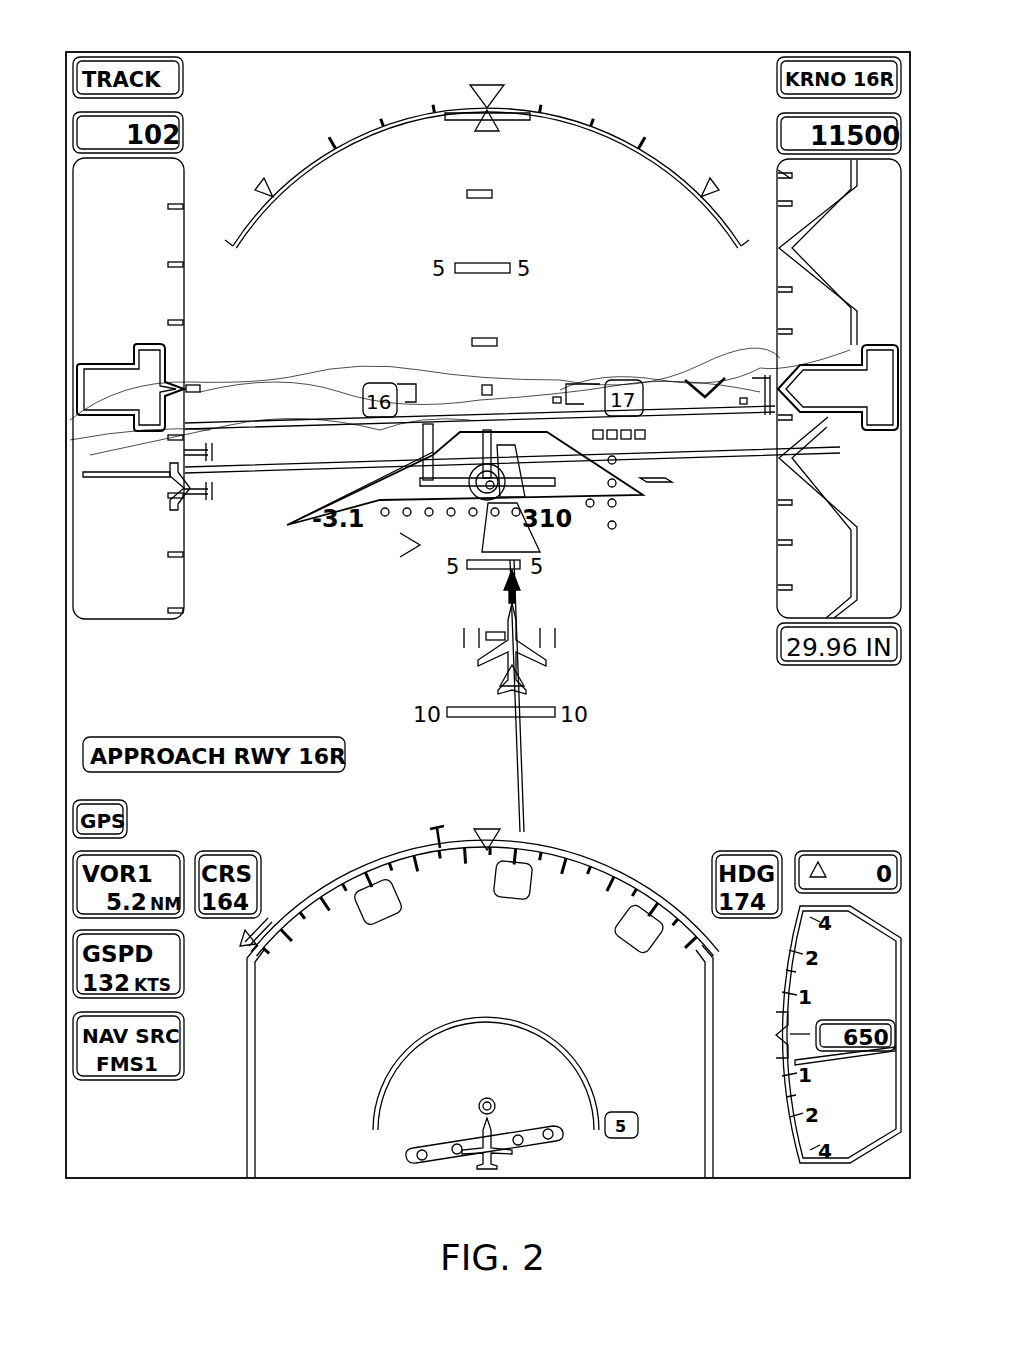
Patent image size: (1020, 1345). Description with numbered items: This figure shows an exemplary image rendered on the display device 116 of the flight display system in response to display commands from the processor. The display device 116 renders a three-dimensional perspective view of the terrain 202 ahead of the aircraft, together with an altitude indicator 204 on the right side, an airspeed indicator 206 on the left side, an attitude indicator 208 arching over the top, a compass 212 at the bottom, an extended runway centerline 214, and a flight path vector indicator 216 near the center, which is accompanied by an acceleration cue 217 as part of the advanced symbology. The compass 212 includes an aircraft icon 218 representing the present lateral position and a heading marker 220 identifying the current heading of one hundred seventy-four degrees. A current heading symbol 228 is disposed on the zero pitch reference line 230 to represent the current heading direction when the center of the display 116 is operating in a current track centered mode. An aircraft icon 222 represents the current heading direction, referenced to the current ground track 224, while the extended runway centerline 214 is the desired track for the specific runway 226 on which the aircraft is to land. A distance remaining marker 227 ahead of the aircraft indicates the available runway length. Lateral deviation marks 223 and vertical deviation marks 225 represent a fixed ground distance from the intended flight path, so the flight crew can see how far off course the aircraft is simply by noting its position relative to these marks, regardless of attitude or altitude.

The display device 116 is at (707, 52).
The terrain 202 is at (310, 378).
The altitude indicator 204 is at (777, 267).
The airspeed indicator 206 is at (184, 291).
The attitude indicator 208 is at (640, 162).
The compass 212 is at (604, 858).
The extended runway centerline 214 is at (530, 760).
The flight path vector indicator 216 is at (455, 475).
The acceleration cue 217 is at (418, 438).
The aircraft icon 218 is at (500, 1152).
The heading marker 220 is at (480, 825).
The aircraft icon 222 is at (522, 668).
The lateral deviation marks 223 is at (556, 636).
The ground track icon 224 is at (522, 582).
The vertical deviation marks 225 is at (630, 510).
The runway 226 is at (543, 545).
The distance remaining marker 227 is at (674, 482).
The current heading symbol 228 is at (685, 376).
The zero pitch reference line 230 is at (266, 478).